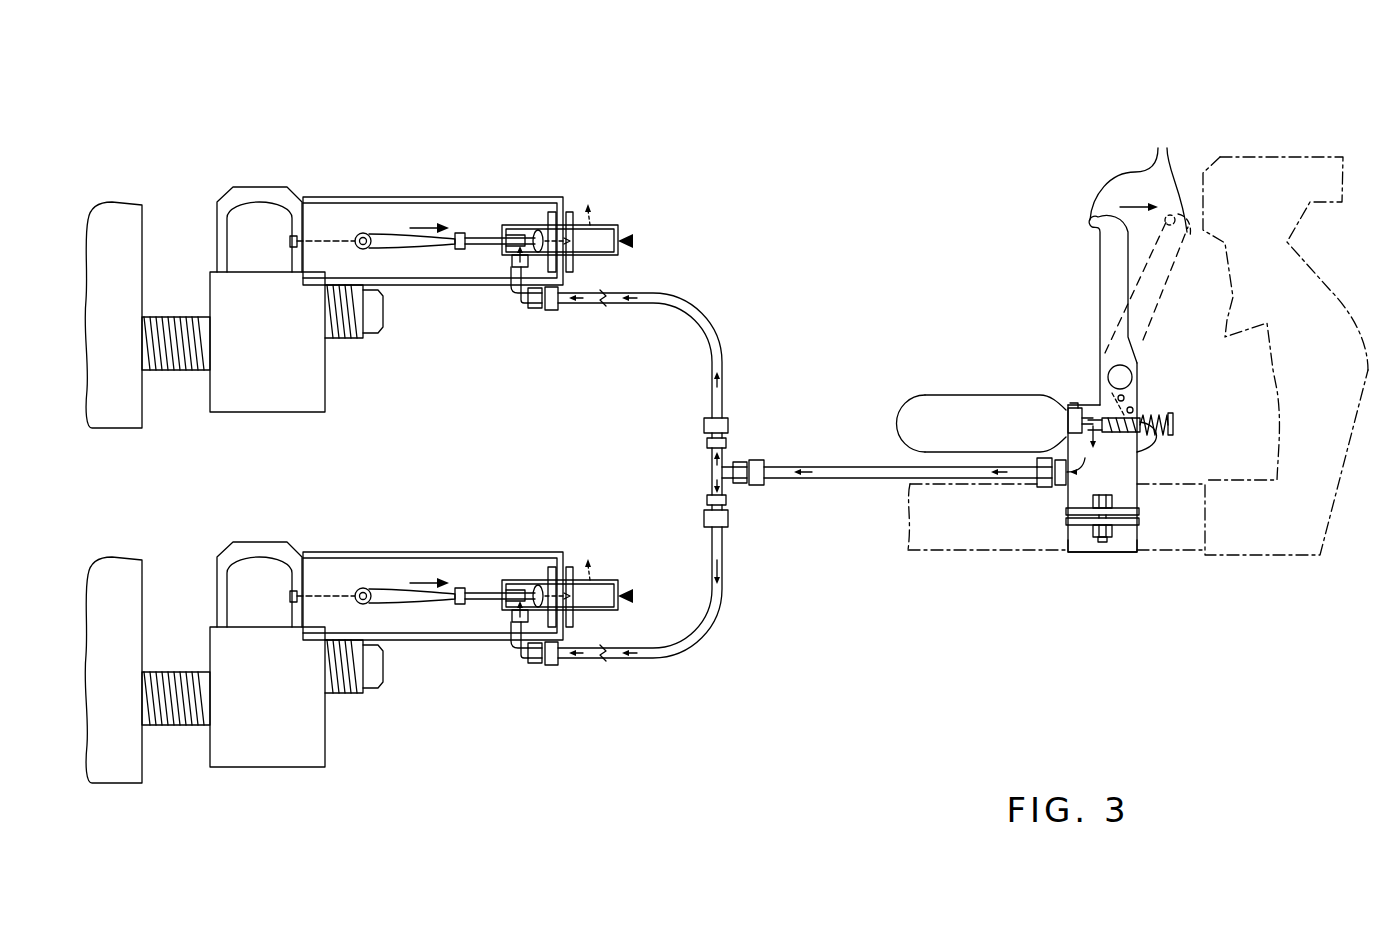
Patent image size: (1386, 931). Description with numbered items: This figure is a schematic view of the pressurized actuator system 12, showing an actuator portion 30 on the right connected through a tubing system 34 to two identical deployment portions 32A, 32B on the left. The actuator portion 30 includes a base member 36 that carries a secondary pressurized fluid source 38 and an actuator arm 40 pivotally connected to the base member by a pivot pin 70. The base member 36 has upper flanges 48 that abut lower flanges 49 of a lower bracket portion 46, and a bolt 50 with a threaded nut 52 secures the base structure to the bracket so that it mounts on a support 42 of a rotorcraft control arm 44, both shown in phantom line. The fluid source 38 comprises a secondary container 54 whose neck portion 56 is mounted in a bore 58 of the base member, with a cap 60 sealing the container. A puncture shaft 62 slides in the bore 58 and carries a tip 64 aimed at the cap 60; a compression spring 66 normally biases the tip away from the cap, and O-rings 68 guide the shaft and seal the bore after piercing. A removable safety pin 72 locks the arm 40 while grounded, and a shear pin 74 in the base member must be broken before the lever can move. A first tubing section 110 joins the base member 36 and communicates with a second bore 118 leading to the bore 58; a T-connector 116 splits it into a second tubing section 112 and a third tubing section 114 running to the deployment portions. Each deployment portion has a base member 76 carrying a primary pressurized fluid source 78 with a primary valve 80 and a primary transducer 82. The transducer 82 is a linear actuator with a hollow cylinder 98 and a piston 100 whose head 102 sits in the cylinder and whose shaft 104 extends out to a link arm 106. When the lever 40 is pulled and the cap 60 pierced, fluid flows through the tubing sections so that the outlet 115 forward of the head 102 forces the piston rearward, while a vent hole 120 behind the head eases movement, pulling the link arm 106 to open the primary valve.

The actuator system 12 is at (762, 152).
The actuator portion 30 is at (991, 253).
The deployment portion 32A is at (422, 172).
The deployment portion 32B is at (422, 527).
The tubing system 34 is at (800, 452).
The base member 36 is at (1137, 465).
The secondary pressurized fluid source 38 is at (966, 403).
The actuator arm 40 is at (1138, 176).
The support 42 is at (996, 551).
The rotorcraft control arm 44 is at (1340, 312).
The lower bracket portion 46 is at (1122, 540).
The upper flanges 48 is at (1068, 511).
The lower flanges 49 is at (1068, 522).
The bolt 50 is at (1137, 495).
The threaded nut 52 is at (1095, 537).
The secondary container 54 is at (918, 397).
The neck portion 56 is at (1068, 406).
The bore 58 is at (1073, 378).
The cap 60 is at (1072, 421).
The puncture shaft 62 is at (1162, 414).
The tip 64 is at (1098, 370).
The compression spring 66 is at (1168, 416).
The O-rings 68 is at (1137, 447).
The pivot pin 70 is at (1135, 372).
The safety pin 72 is at (1133, 398).
The shear pin 74 is at (1148, 418).
The base member 76 is at (325, 197).
The primary pressurized fluid source 78 is at (128, 197).
The primary valve 80 is at (250, 190).
The primary transducer 82 is at (616, 227).
The hollow cylinder 98 is at (633, 241).
The piston 100 is at (486, 228).
The head 102 is at (551, 212).
The shaft 104 is at (487, 248).
The link arm 106 is at (357, 234).
The first tubing section 110 is at (835, 479).
The second tubing section 112 is at (693, 312).
The third tubing section 114 is at (711, 637).
The outlet 115 is at (512, 266).
The T-connector 116 is at (711, 470).
The second bore 118 is at (1140, 478).
The vent hole 120 is at (597, 224).